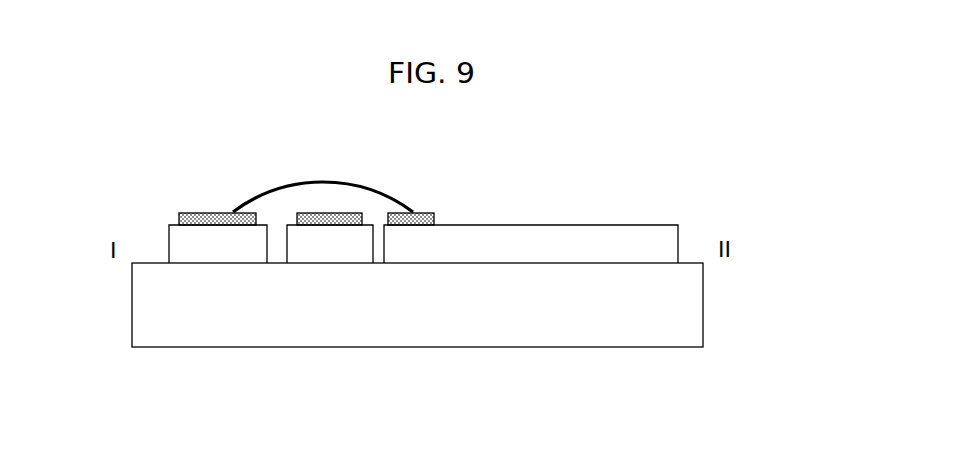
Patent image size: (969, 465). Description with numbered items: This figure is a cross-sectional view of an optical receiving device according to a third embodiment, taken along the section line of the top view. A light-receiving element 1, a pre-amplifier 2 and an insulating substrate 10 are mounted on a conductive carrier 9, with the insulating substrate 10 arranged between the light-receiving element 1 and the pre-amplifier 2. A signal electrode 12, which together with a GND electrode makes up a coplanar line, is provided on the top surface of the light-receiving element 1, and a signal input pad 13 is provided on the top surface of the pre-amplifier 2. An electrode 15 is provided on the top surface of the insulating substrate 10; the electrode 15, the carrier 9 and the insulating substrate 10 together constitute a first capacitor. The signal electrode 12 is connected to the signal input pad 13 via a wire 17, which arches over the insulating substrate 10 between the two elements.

The light-receiving element 1 is at (169, 247).
The pre-amplifier 2 is at (650, 224).
The conductive carrier 9 is at (691, 308).
The insulating substrate 10 is at (330, 250).
The signal electrode 12 is at (210, 212).
The signal input pad 13 is at (428, 212).
The electrode 15 is at (338, 212).
The wire 17 is at (317, 183).